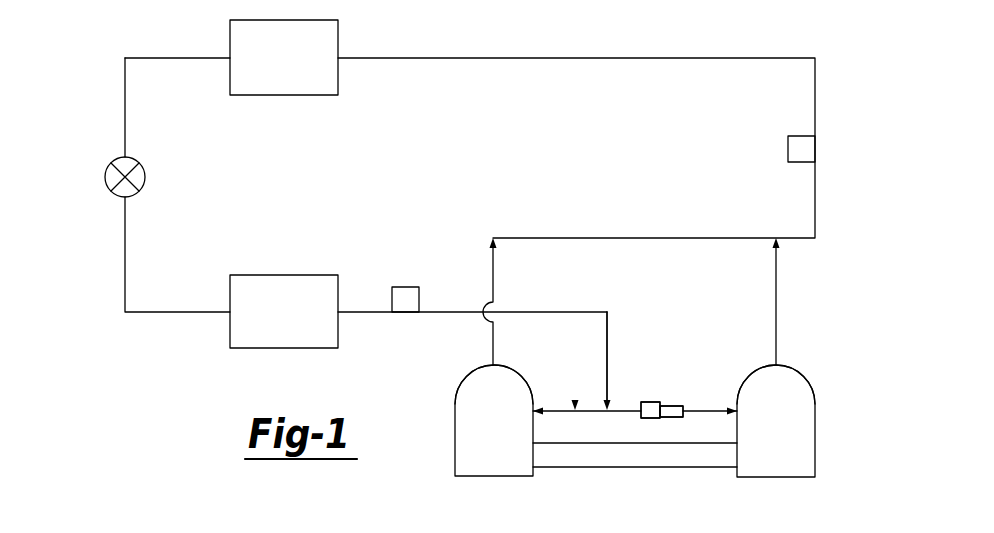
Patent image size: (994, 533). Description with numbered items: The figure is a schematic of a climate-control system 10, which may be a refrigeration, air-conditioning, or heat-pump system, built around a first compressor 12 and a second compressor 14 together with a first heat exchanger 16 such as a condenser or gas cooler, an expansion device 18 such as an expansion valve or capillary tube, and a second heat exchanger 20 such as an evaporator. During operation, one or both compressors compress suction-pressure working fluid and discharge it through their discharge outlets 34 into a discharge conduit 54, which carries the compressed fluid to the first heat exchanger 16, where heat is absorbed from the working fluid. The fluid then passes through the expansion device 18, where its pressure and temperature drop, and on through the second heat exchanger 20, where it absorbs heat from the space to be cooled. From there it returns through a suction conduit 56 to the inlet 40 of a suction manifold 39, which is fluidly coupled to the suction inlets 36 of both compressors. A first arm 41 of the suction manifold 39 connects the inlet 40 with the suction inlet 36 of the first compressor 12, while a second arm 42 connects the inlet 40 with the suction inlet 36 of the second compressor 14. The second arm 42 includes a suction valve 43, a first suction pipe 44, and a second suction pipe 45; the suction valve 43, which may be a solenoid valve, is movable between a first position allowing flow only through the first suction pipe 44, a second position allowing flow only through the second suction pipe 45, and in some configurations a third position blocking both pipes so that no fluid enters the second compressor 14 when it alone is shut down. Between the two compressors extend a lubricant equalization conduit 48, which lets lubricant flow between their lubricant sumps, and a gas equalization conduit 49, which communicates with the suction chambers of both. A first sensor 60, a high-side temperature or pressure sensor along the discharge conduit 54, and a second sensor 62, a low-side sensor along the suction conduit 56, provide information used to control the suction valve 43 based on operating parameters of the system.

The climate-control system 10 is at (716, 29).
The first compressor 12 is at (449, 461).
The second compressor 14 is at (822, 456).
The first heat exchanger 16 is at (230, 42).
The expansion device 18 is at (106, 174).
The second heat exchanger 20 is at (230, 326).
The discharge outlets 34 is at (493, 365).
The suction inlets 36 is at (541, 409).
The suction manifold 39 is at (575, 400).
The inlet 40 is at (611, 402).
The first arm 41 is at (593, 412).
The second arm 42 is at (653, 432).
The suction valve 43 is at (650, 402).
The first suction pipe 44 is at (672, 406).
The second suction pipe 45 is at (670, 418).
The lubricant equalization conduit 48 is at (563, 467).
The gas equalization conduit 49 is at (580, 443).
The discharge conduit 54 is at (815, 193).
The suction conduit 56 is at (450, 312).
The first sensor 60 is at (788, 150).
The second sensor 62 is at (407, 287).